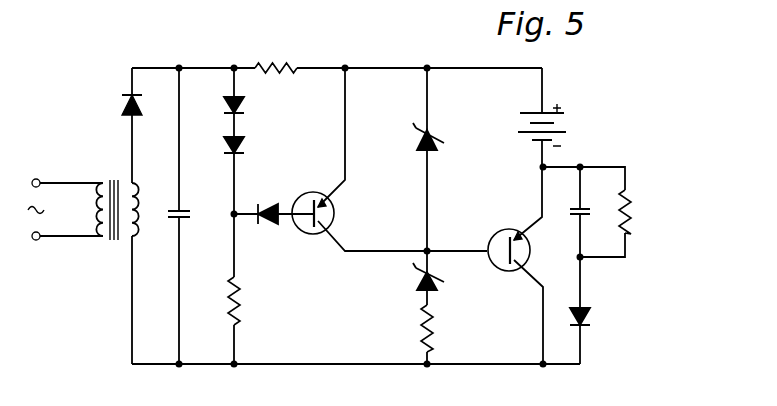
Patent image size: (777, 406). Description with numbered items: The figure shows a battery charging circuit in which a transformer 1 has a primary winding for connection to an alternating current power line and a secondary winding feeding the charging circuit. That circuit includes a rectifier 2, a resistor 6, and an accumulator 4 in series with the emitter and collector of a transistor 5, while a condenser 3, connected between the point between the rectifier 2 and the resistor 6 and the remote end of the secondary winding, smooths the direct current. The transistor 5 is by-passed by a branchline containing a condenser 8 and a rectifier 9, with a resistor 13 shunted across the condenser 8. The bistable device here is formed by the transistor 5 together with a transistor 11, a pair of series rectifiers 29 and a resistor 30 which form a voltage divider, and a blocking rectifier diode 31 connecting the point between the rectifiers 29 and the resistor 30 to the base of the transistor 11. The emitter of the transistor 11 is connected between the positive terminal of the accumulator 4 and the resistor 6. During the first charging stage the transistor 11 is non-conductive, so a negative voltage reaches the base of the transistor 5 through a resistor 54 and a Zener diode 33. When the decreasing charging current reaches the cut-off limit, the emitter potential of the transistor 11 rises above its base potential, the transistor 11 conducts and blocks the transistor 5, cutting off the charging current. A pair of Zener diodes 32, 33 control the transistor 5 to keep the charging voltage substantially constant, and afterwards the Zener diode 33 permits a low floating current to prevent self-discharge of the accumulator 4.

The transformer 1 is at (68, 241).
The rectifier 2 is at (118, 103).
The condenser 3 is at (190, 222).
The accumulator 4 is at (564, 123).
The transistor 5 is at (530, 263).
The resistor 6 is at (298, 73).
The condenser 8 is at (584, 205).
The rectifier 9 is at (592, 319).
The transistor 11 is at (337, 203).
The resistor 13 is at (631, 210).
The pair of rectifiers 29 is at (248, 108).
The resistor 30 is at (240, 300).
The blocking rectifier diode 31 is at (270, 227).
The Zener diode 32 is at (436, 153).
The Zener diode 33 is at (415, 281).
The resistor 54 is at (436, 325).